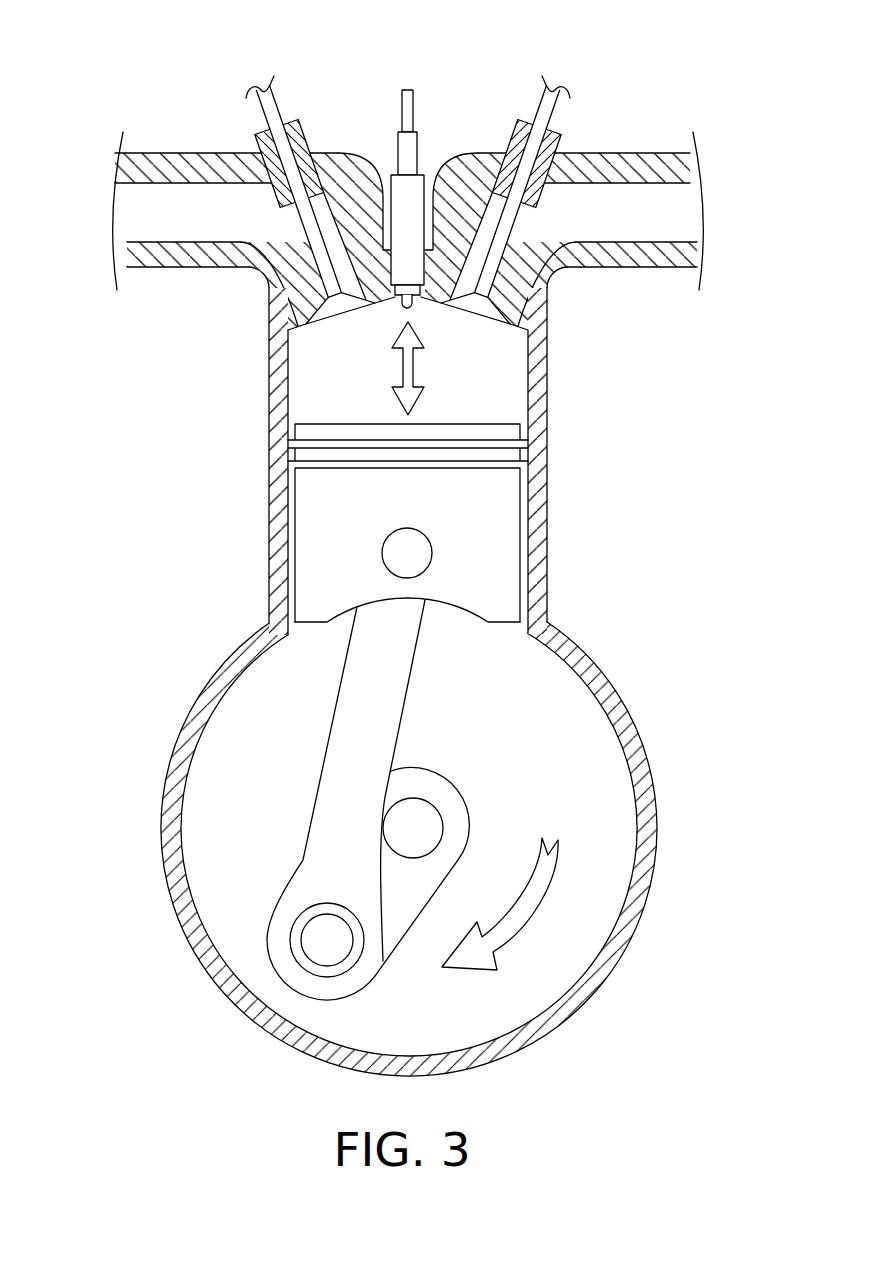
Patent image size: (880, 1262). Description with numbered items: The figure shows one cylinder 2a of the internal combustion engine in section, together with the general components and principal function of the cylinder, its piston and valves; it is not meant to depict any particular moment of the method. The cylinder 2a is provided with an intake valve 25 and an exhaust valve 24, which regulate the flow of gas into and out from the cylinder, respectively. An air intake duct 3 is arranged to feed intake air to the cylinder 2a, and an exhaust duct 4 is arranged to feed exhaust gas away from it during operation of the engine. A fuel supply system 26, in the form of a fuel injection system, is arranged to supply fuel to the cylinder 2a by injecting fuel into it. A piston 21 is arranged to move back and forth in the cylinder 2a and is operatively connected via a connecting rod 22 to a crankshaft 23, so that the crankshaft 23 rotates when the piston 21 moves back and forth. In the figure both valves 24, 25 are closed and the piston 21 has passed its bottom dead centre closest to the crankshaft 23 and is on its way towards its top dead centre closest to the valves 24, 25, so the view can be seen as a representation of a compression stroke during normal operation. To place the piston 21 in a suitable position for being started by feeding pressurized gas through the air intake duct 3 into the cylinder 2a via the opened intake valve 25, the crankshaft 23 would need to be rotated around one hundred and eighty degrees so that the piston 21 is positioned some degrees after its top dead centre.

The fuel supply system 26 is at (402, 113).
The exhaust valve 24 is at (310, 232).
The intake valve 25 is at (506, 232).
The exhaust duct 4 is at (164, 217).
The air intake duct 3 is at (657, 216).
The cylinder 2a is at (270, 408).
The piston 21 is at (377, 495).
The connecting rod 22 is at (377, 697).
The crankshaft 23 is at (413, 828).